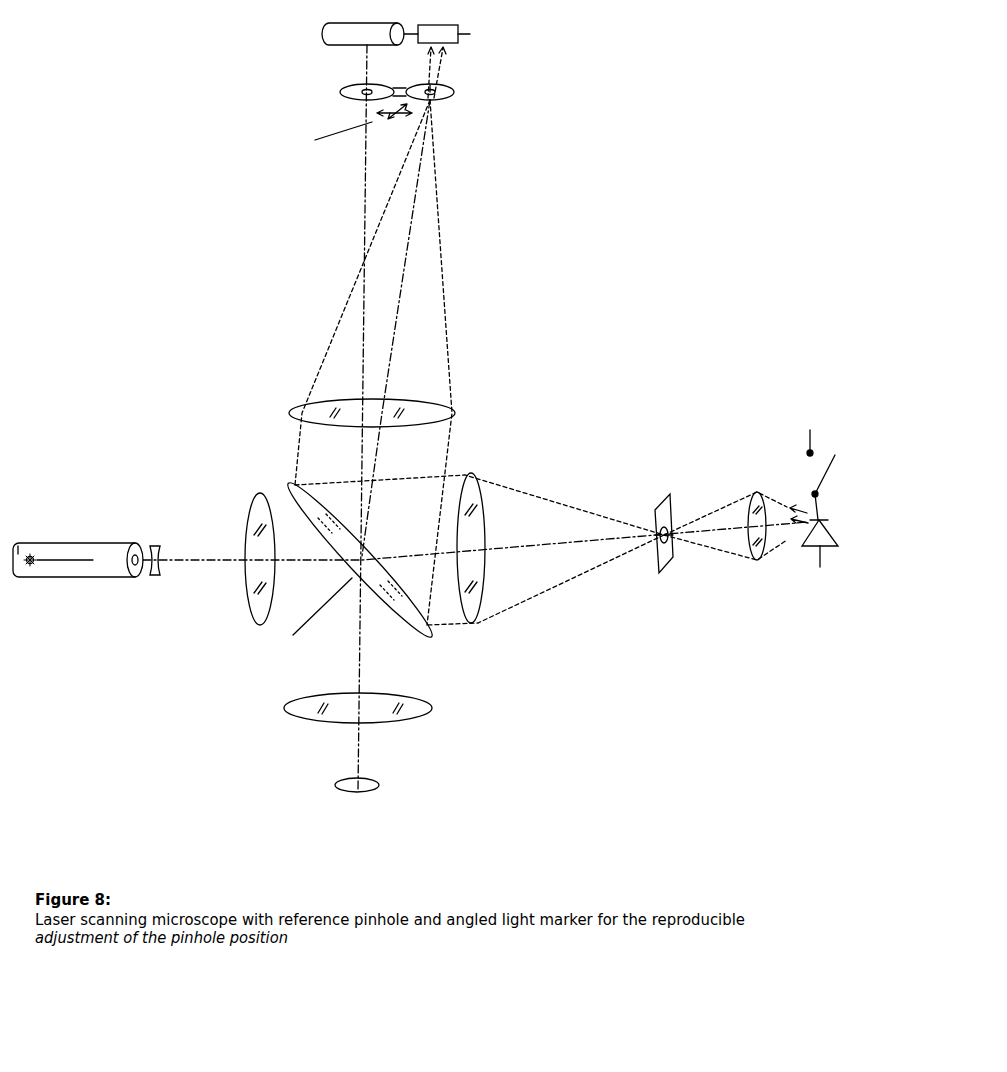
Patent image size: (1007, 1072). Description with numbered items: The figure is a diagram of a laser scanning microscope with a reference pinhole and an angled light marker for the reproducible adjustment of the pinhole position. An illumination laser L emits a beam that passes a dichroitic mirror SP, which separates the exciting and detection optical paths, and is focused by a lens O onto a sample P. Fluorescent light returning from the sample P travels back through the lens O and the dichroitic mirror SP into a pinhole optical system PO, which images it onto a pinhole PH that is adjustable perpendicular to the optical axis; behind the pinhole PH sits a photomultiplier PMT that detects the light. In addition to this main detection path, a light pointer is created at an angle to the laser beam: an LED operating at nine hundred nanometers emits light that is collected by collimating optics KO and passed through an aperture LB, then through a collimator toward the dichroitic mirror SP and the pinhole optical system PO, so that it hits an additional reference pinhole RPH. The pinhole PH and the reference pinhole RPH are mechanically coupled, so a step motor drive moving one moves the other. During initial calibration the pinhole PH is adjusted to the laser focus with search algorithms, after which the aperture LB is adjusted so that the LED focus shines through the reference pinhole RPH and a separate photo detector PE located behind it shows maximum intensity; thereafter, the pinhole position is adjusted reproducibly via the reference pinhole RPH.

The photomultiplier PMT is at (338, 34).
The photo detector PE is at (462, 61).
The pinhole PH is at (253, 134).
The reference pinhole RPH is at (529, 106).
The pinhole optical system PO is at (391, 413).
The illumination laser L is at (86, 576).
The dichroitic mirror SP is at (348, 565).
The element collimator is at (502, 565).
The aperture LB is at (657, 513).
The collimating optics KO is at (749, 507).
The element LED is at (825, 525).
The lens O is at (374, 708).
The sample P is at (370, 786).